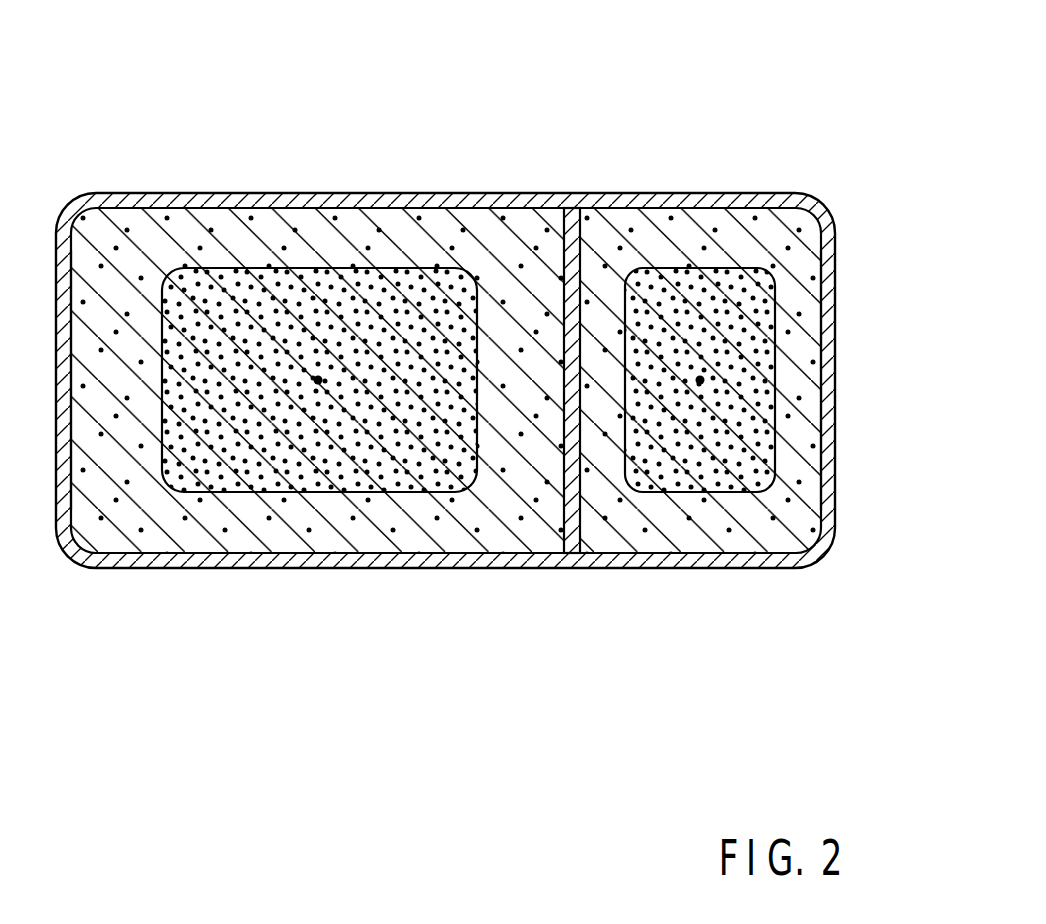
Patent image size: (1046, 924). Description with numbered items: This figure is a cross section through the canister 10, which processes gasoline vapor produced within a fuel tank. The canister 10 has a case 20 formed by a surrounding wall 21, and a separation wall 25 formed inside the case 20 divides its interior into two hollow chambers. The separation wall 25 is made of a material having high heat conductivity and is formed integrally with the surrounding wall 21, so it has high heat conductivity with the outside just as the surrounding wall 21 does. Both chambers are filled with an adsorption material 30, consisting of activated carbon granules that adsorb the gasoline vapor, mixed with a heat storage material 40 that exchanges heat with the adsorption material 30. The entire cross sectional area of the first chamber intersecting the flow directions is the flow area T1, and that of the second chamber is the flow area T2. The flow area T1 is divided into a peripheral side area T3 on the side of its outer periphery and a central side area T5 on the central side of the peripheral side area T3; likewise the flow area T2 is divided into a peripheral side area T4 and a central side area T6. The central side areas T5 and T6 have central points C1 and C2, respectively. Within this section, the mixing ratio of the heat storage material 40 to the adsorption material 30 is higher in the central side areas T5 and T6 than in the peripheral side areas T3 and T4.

The canister 10 is at (846, 194).
The case 20 is at (446, 474).
The surrounding wall 21 is at (447, 566).
The separation wall 25 is at (592, 262).
The adsorption material 30 is at (133, 252).
The heat storage material 40 is at (474, 243).
The central point C1 is at (318, 376).
The central point C2 is at (702, 376).
The flow area T1 is at (160, 497).
The flow area T2 is at (666, 523).
The peripheral side area T3 is at (107, 528).
The peripheral side area T4 is at (790, 305).
The central side area T5 is at (253, 288).
The central side area T6 is at (652, 282).